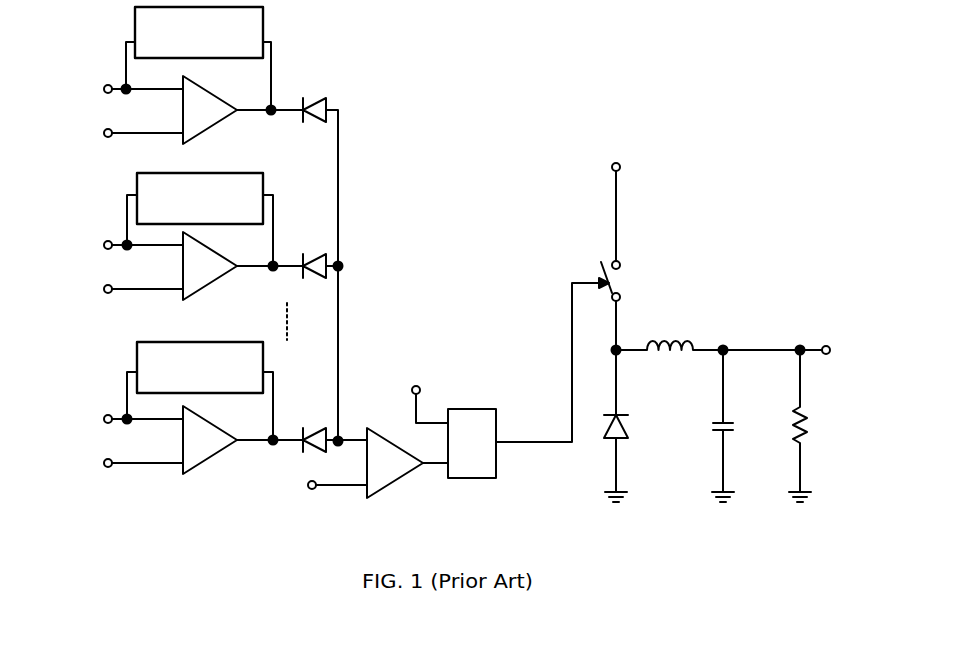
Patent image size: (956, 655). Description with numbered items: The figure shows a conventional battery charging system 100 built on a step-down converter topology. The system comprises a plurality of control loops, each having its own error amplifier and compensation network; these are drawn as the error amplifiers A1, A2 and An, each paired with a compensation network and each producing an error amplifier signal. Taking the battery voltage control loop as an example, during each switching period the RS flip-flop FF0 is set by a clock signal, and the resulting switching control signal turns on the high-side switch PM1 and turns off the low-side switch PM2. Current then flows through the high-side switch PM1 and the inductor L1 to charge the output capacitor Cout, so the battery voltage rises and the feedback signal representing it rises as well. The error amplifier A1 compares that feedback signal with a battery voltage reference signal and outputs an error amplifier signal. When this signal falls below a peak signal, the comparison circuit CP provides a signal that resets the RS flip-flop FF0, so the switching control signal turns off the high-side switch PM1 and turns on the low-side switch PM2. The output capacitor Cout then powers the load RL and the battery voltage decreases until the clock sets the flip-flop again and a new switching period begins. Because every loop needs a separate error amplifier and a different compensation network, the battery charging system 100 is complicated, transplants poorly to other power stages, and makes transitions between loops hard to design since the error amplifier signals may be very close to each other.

The battery charging system 100 is at (447, 254).
The error amplifier A1 is at (198, 75).
The error amplifier A2 is at (200, 236).
The error amplifier An is at (200, 408).
The comparison circuit CP is at (395, 462).
The RS flip-flop FF0 is at (472, 433).
The high-side switch PM1 is at (633, 281).
The low-side switch PM2 is at (640, 421).
The inductor L1 is at (669, 335).
The output capacitor Cout is at (744, 421).
The load RL is at (814, 421).